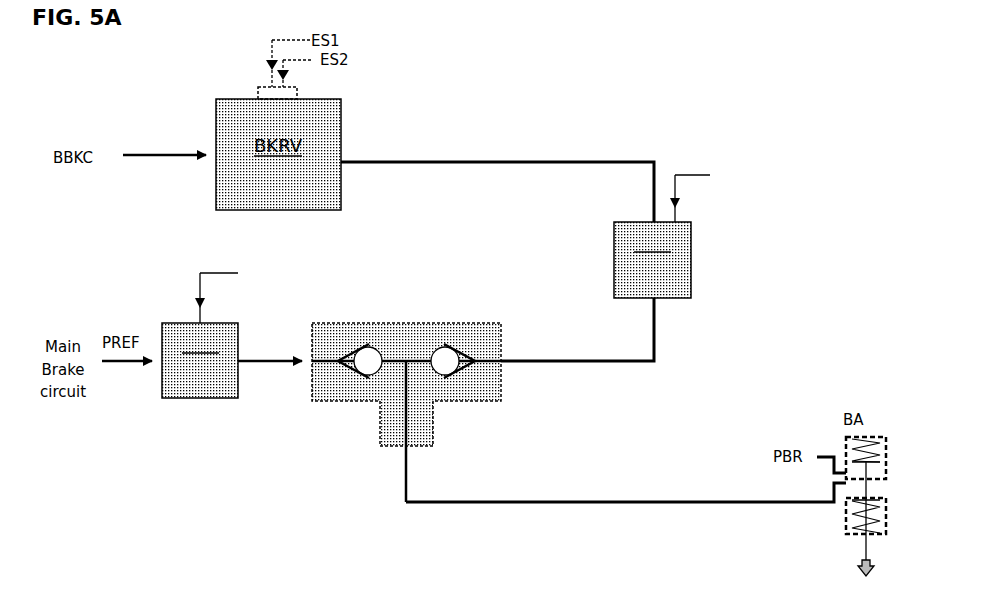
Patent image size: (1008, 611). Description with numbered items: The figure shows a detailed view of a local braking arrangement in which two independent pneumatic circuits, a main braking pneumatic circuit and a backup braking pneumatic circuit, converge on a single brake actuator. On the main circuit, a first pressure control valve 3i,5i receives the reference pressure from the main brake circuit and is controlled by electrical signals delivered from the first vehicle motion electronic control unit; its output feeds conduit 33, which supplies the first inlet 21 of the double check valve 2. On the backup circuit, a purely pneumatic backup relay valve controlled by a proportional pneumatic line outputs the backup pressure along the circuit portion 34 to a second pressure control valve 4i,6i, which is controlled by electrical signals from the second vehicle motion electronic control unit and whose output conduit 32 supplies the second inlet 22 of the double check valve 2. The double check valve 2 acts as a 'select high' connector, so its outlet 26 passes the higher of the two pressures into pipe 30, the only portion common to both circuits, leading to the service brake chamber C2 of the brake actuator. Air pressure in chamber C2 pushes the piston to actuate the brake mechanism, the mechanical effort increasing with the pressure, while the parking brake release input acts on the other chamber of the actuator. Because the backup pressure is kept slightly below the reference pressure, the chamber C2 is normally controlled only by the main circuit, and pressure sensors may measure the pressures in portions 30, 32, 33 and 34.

The double check valve 2 is at (463, 318).
The first inlet 21 is at (312, 356).
The second inlet 22 is at (501, 361).
The outlet 26 is at (407, 446).
The pipe 30 is at (605, 502).
The conduit 32 is at (592, 362).
The conduit 33 is at (282, 362).
The pneumatic circuit portion 34 is at (525, 162).
The first pressure control valve 3i,5i is at (218, 398).
The second pressure control valve 4i,6i is at (691, 261).
The service brake chamber C2 is at (877, 488).